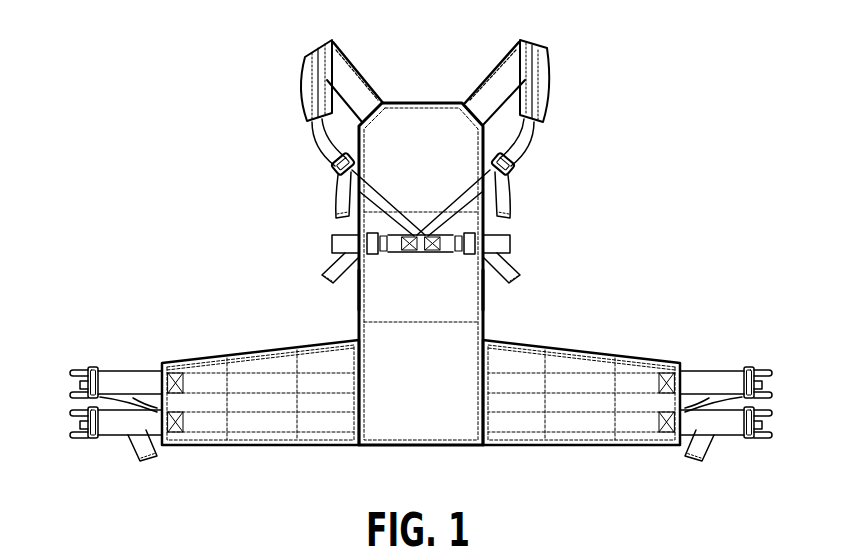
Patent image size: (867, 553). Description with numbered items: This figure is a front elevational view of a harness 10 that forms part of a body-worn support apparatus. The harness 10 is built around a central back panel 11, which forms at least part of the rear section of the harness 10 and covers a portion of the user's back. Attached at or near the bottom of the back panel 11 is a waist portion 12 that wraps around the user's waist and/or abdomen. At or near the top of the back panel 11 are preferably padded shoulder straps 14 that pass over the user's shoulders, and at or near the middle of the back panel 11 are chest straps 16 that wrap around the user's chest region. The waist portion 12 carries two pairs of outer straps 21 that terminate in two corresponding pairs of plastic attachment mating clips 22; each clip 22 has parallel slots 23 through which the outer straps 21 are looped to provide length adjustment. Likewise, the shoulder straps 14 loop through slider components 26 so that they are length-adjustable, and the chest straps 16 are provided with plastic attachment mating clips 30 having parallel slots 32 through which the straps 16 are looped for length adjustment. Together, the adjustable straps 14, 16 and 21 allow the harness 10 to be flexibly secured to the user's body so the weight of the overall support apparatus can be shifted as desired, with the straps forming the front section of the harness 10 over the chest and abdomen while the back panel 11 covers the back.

The harness 10 is at (704, 110).
The central back panel 11 is at (438, 127).
The waist portion 12 is at (308, 430).
The shoulder straps 14 is at (323, 43).
The chest straps 16 is at (332, 244).
The outer straps 21 is at (135, 386).
The attachment mating clips 22 is at (68, 383).
The parallel slots 23 is at (92, 366).
The slider components 26 is at (333, 166).
The attachment mating clips 30 is at (463, 252).
The parallel slots 32 is at (358, 290).